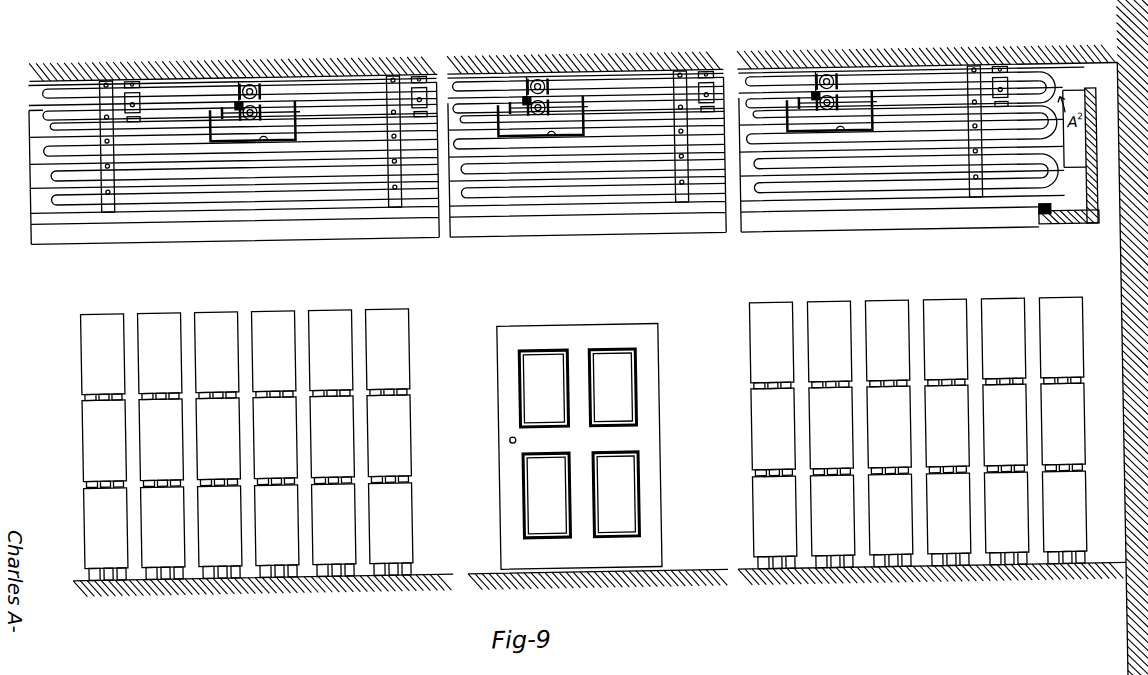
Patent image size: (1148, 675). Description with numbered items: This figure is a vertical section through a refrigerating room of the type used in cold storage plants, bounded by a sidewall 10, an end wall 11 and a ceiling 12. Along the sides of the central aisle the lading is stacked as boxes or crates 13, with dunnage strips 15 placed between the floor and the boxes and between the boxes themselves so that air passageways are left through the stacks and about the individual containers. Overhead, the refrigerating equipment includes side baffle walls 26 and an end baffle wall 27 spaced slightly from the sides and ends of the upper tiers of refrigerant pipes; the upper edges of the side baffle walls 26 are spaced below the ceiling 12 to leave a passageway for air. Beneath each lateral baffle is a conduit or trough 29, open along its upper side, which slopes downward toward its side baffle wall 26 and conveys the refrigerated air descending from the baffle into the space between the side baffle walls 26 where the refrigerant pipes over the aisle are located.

The sidewall 10 is at (703, 550).
The end wall 11 is at (1139, 252).
The ceiling 12 is at (1087, 74).
The boxes or crates 13 is at (160, 304).
The dunnage strips 15 is at (404, 389).
The side baffle wall 26 is at (37, 126).
The end baffle wall 27 is at (1093, 156).
The conduit or trough 29 is at (267, 137).